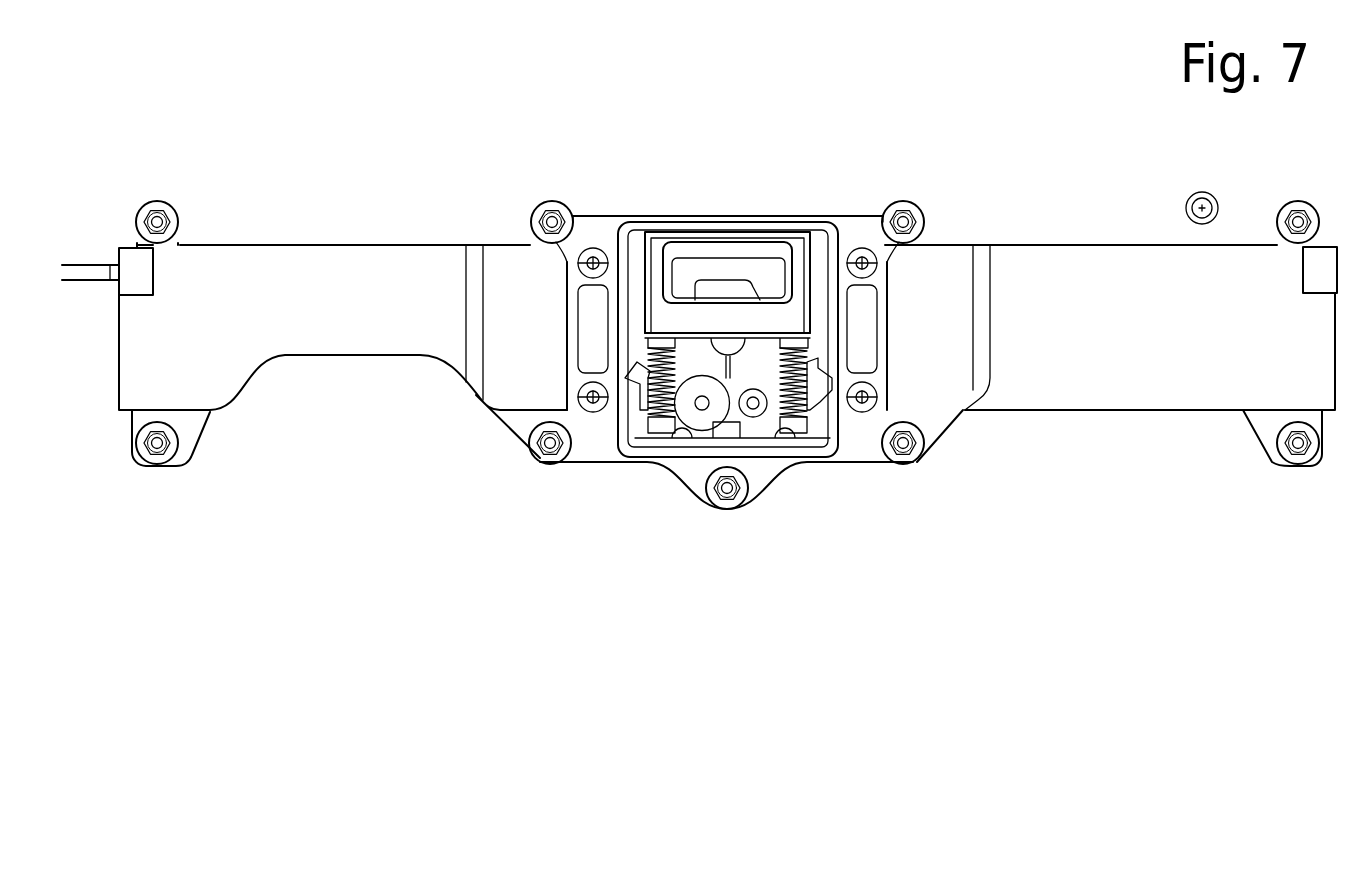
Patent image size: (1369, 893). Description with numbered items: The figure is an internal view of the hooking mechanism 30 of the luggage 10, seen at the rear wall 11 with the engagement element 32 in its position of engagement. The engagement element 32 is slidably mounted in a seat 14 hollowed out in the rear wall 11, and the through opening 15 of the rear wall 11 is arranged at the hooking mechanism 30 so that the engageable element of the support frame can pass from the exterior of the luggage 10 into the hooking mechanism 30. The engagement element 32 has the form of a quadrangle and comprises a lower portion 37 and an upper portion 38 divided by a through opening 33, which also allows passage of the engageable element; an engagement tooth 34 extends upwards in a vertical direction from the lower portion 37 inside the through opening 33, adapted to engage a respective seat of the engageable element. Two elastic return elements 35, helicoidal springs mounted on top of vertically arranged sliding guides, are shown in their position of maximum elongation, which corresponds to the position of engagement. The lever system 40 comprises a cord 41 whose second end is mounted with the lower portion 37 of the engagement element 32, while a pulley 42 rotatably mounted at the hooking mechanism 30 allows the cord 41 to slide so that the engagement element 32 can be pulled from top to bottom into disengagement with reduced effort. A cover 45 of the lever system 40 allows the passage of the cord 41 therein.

The luggage 10 is at (312, 270).
The rear wall 11 is at (1115, 310).
The seat 14 is at (807, 352).
The through opening 15 is at (730, 272).
The hooking mechanism 30 is at (729, 188).
The engagement element 32 is at (660, 245).
The through opening 33 is at (700, 240).
The engagement tooth 34 is at (745, 290).
The elastic return element 35 is at (648, 415).
The lower portion 37 is at (738, 318).
The upper portion 38 is at (758, 247).
The lever system 40 is at (636, 390).
The cord 41 is at (753, 410).
The pulley 42 is at (705, 417).
The cover 45 is at (108, 279).